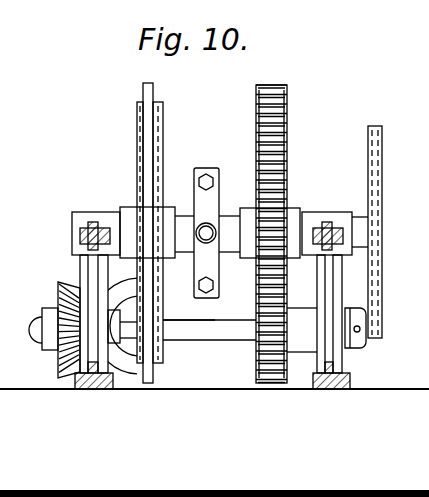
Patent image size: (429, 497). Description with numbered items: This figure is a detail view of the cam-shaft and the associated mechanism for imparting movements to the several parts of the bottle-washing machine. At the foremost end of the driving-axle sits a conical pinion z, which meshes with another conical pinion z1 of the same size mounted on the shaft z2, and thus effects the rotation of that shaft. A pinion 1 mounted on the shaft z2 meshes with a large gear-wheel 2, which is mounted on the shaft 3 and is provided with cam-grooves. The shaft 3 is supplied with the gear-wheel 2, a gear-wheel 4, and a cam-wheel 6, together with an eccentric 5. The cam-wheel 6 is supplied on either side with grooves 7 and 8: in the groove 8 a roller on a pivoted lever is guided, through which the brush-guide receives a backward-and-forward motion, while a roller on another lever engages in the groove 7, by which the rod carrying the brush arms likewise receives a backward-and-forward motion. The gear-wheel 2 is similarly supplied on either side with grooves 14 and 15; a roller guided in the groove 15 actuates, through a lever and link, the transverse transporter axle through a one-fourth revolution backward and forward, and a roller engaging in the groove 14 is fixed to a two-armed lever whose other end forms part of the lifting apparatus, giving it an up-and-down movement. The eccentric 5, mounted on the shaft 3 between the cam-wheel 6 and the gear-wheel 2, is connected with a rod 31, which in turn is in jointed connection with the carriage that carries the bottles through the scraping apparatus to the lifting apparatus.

The pinion 1 is at (254, 362).
The gear-wheel 2 is at (270, 85).
The shaft 3 is at (227, 215).
The rod 31 is at (213, 241).
The gear-wheel 4 is at (383, 119).
The eccentric 5 is at (200, 168).
The cam-wheel 6 is at (149, 83).
The groove 7 is at (137, 110).
The groove 8 is at (163, 112).
The groove 14 is at (256, 110).
The groove 15 is at (287, 114).
The conical pinion z is at (77, 290).
The conical pinion z1 is at (56, 303).
The shaft z2 is at (198, 344).